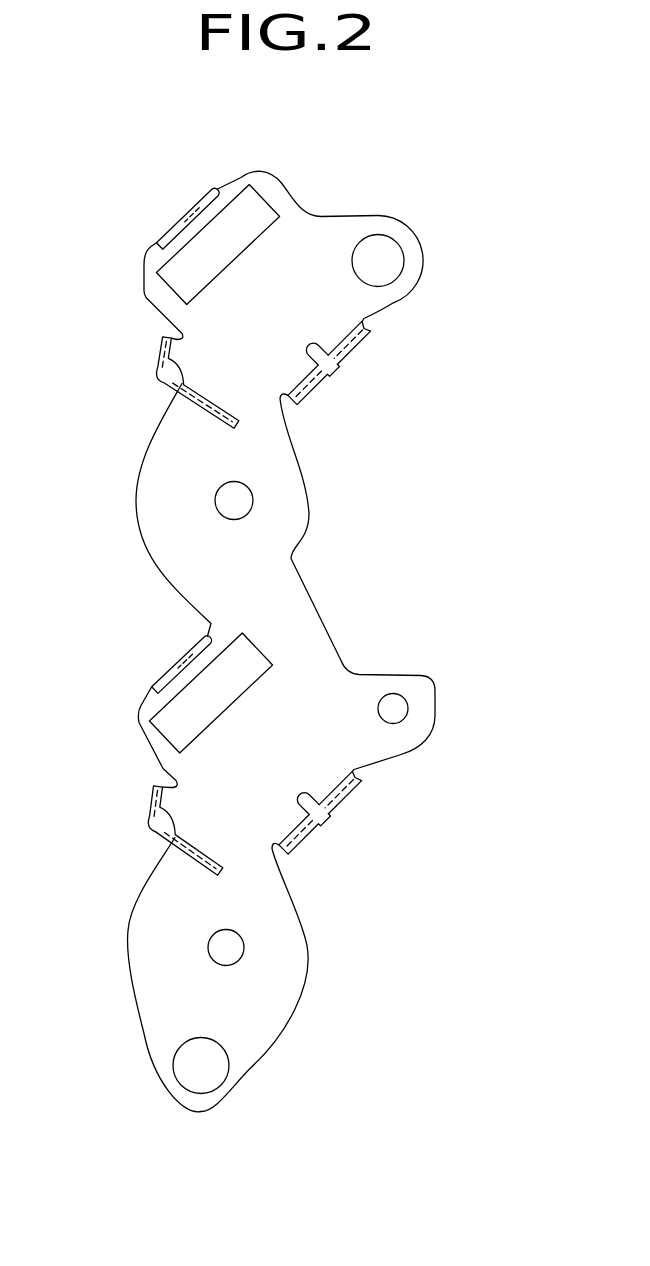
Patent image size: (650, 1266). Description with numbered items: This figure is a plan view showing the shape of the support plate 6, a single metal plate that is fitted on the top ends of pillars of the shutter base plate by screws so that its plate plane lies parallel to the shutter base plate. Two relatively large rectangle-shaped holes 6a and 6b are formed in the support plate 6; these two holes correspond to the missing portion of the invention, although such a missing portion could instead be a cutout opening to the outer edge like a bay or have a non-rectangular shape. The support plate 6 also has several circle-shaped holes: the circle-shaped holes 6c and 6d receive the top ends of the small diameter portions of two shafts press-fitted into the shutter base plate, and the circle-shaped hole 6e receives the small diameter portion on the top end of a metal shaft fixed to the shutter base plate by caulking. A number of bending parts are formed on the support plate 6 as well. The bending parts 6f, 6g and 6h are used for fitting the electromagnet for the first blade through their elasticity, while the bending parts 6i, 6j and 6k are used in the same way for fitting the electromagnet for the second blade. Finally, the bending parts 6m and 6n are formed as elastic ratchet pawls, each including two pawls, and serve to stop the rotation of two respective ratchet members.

The support plate 6 is at (340, 227).
The rectangle-shaped hole 6a is at (155, 713).
The rectangle-shaped hole 6b is at (231, 199).
The circle-shaped hole 6c is at (222, 935).
The circle-shaped hole 6d is at (229, 488).
The circle-shaped hole 6e is at (389, 716).
The bending part 6f is at (166, 676).
The bending part 6g is at (348, 796).
The bending part 6h is at (312, 833).
The bending part 6i is at (165, 226).
The bending part 6j is at (357, 347).
The bending part 6k is at (311, 385).
The bending part 6m is at (152, 834).
The bending part 6n is at (163, 392).